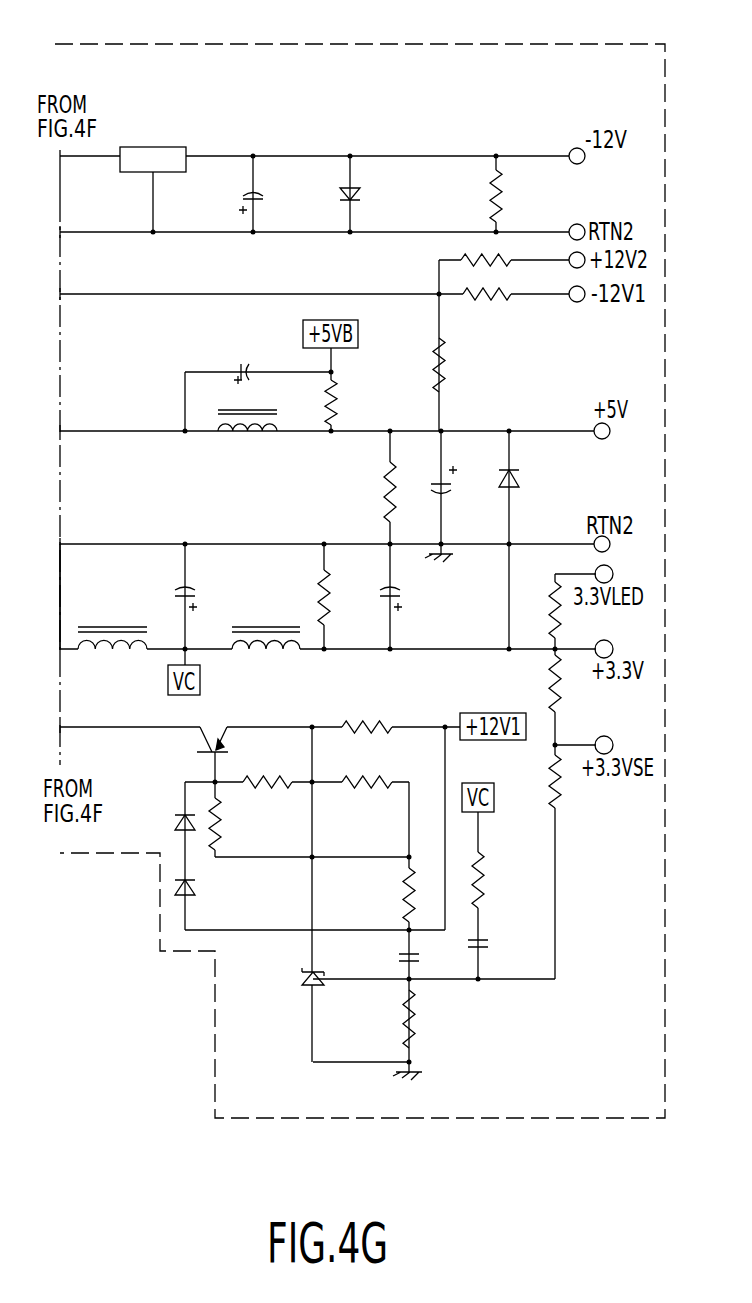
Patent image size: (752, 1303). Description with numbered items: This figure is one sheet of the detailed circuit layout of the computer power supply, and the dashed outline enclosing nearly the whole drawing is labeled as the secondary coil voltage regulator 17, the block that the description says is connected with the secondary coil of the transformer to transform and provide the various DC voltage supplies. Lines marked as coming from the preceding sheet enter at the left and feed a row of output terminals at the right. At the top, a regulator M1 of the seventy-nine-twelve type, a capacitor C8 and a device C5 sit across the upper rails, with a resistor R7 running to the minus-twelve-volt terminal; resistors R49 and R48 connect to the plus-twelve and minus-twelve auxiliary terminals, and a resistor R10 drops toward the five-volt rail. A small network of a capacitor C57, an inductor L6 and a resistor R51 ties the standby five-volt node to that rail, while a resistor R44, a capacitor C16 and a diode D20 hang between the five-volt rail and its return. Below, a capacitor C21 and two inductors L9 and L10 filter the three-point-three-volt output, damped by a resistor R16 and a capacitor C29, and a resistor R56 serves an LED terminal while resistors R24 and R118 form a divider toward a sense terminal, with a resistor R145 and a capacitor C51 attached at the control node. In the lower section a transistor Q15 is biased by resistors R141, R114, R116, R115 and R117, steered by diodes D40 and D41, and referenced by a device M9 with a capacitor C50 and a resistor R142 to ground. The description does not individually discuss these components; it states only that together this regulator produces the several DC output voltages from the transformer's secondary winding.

The secondary coil voltage regulator 17 is at (417, 60).
The voltage regulator 7912 M1 is at (153, 147).
The capacitor C8 is at (240, 196).
The diode/capacitor C5 is at (359, 182).
The resistor R7 is at (511, 196).
The resistor R49 is at (486, 248).
The resistor R48 is at (487, 307).
The resistor R10 is at (424, 365).
The capacitor C57 is at (249, 361).
The inductor L6 is at (247, 408).
The resistor R51 is at (315, 402).
The resistor R44 is at (373, 492).
The capacitor C16 is at (455, 492).
The diode D20 is at (528, 484).
The capacitor C21 is at (202, 595).
The inductor L9 is at (112, 626).
The inductor L10 is at (266, 626).
The resistor R16 is at (342, 597).
The capacitor C29 is at (408, 596).
The resistor R56 is at (572, 610).
The resistor R24 is at (535, 683).
The resistor R118 is at (532, 781).
The resistor R145 is at (504, 880).
The capacitor C51 is at (493, 928).
The transistor Q15 is at (237, 727).
The resistor R141 is at (370, 716).
The resistor R114 is at (270, 770).
The resistor R116 is at (367, 770).
The resistor R115 is at (238, 824).
The resistor R117 is at (383, 895).
The diode D40 is at (166, 824).
The diode D41 is at (204, 891).
The zener diode / reference M9 is at (302, 966).
The capacitor C50 is at (392, 957).
The resistor R142 is at (434, 1019).